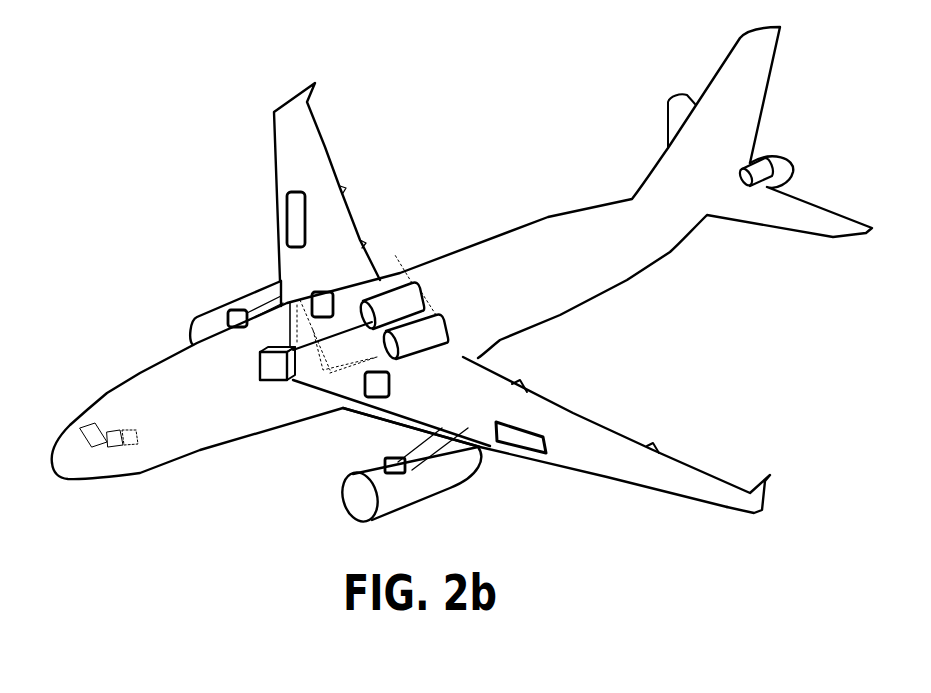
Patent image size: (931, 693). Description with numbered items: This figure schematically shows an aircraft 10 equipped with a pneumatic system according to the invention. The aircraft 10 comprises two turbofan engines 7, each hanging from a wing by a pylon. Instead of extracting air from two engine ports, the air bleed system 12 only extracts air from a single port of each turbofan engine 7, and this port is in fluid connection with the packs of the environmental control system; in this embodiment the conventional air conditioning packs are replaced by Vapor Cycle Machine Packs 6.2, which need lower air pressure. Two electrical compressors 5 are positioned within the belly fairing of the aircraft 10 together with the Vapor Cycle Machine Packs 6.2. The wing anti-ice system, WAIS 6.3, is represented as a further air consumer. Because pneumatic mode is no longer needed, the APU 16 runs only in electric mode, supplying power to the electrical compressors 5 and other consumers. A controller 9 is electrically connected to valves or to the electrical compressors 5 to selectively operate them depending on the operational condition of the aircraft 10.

The aircraft 10 is at (140, 305).
The turbofan engine 7 is at (207, 313).
The WAIS 6.3 is at (287, 207).
The electrical compressor 5 is at (320, 303).
The Vapor Cycle Machine Pack 6.2 is at (437, 328).
The controller 9 is at (272, 372).
The air bleed system 12 is at (280, 410).
The APU 16 is at (770, 153).